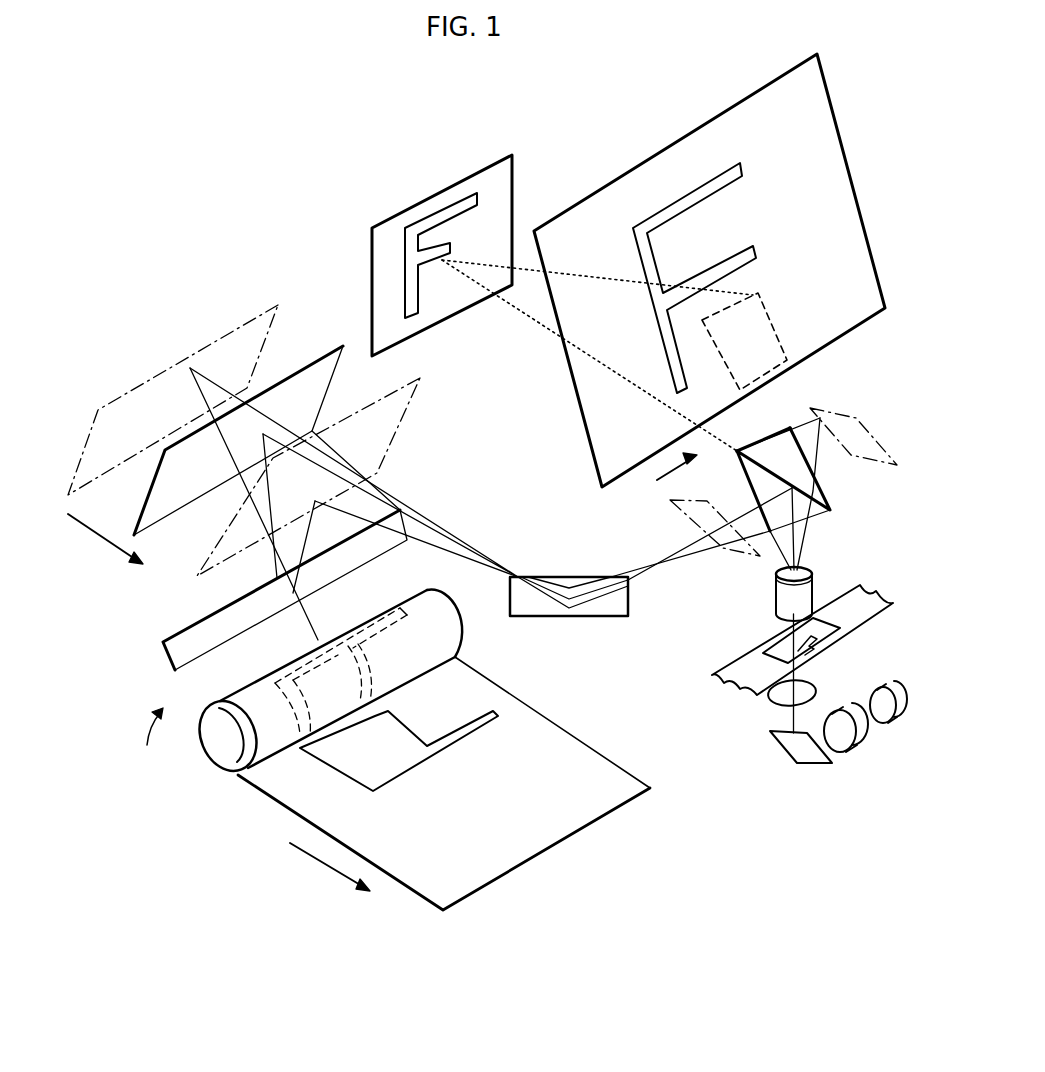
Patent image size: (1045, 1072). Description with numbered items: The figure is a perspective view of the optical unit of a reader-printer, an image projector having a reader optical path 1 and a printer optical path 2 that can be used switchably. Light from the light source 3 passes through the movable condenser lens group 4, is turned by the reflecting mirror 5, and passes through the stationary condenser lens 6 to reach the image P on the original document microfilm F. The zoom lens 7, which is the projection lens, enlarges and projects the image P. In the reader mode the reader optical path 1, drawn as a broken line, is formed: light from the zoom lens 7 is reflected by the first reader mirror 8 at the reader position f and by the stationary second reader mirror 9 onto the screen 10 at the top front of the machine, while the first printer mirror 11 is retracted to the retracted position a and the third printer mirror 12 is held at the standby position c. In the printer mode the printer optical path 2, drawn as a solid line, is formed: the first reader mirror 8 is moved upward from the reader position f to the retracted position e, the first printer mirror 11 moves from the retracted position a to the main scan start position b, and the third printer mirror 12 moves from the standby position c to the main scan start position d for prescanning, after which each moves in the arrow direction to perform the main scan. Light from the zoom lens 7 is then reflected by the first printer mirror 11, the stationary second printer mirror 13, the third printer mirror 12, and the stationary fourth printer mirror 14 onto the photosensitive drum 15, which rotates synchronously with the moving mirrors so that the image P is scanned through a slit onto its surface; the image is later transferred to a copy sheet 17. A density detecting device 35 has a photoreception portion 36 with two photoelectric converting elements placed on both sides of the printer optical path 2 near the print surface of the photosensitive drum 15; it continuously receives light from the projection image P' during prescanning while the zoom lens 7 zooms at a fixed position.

The reader optical path 1 is at (529, 318).
The printer optical path 2 is at (427, 512).
The light source 3 is at (872, 715).
The movable condenser lens group 4 is at (835, 745).
The reflecting mirror 5 is at (789, 750).
The stationary condenser lens 6 is at (760, 688).
The zoom lens 7 is at (768, 587).
The first reader mirror 8 is at (781, 420).
The second reader mirror 9 is at (367, 212).
The screen 10 is at (692, 114).
The first printer mirror 11 is at (729, 443).
The third printer mirror 12 is at (330, 337).
The second printer mirror 13 is at (579, 609).
The fourth printer mirror 14 is at (160, 630).
The photosensitive drum 15 is at (197, 740).
The copy sheet 17 is at (260, 792).
The density detecting device 35 is at (145, 741).
The photoreception portion 36 is at (363, 595).
The retracted position a is at (864, 426).
The main scan start position b is at (658, 494).
The standby position c is at (412, 370).
The main scan start position d is at (245, 296).
The retracted position e is at (752, 285).
The reader position f is at (782, 420).
The original document microfilm F is at (851, 578).
The image P is at (826, 640).
The projection image P' is at (538, 454).